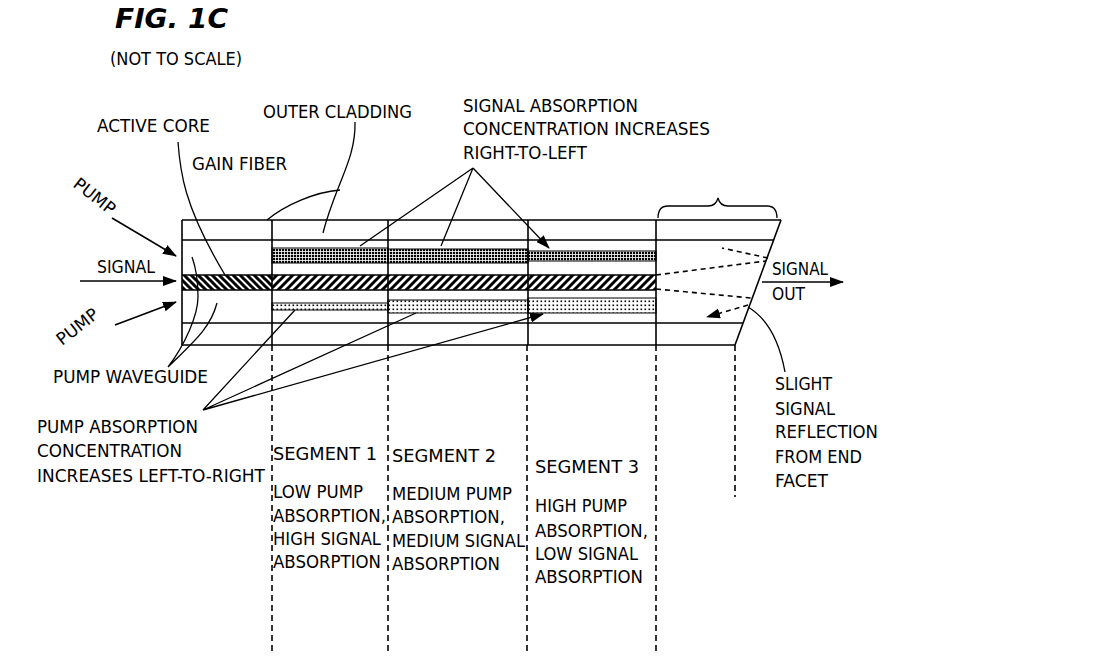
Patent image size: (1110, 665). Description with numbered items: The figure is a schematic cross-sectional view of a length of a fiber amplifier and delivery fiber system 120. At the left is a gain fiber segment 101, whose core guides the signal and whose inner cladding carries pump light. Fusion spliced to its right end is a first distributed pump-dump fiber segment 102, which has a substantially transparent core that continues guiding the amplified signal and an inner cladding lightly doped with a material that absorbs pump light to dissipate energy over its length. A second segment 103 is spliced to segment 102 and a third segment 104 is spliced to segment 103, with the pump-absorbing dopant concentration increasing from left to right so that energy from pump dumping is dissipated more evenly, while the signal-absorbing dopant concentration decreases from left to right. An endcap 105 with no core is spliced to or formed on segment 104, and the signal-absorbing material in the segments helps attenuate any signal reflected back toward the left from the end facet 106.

The gain fiber segment 101 is at (481, 404).
The distributed pump-dump fiber segment 102 is at (362, 346).
The distributed pump-dump fiber segment 103 is at (487, 347).
The distributed pump-dump fiber segment 104 is at (600, 346).
The endcap 105 is at (748, 323).
The end facet 106 is at (770, 243).
The fiber amplifier and delivery fiber system 120 is at (517, 343).